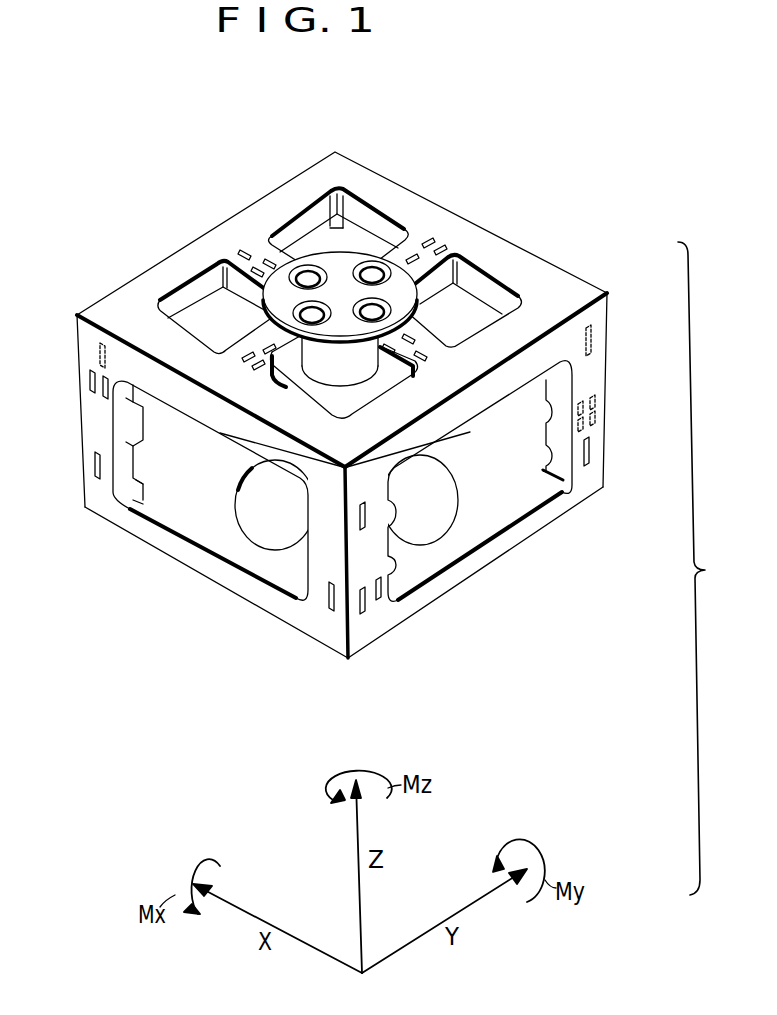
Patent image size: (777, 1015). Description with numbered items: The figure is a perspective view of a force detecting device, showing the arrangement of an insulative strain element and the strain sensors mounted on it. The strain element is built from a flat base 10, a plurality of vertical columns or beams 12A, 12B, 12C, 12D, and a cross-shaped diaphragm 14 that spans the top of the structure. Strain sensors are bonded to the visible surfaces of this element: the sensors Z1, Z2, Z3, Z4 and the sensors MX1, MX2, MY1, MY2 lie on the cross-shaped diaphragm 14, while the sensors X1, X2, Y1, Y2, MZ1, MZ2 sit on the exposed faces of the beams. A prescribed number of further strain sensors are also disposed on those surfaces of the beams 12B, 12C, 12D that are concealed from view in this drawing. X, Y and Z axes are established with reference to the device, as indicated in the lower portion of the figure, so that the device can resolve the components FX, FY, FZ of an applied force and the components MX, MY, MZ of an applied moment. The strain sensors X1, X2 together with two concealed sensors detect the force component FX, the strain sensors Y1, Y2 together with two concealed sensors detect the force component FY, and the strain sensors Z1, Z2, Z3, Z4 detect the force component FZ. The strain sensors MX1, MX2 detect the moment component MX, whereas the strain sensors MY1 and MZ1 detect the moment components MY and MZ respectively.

The flat base 10 is at (497, 520).
The vertical column or beam 12A is at (89, 429).
The vertical column or beam 12B is at (320, 553).
The vertical column or beam 12C is at (600, 386).
The vertical column or beam 12D is at (348, 232).
The cross-shaped diaphragm 14 is at (499, 241).
The strain sensor Z1 is at (410, 256).
The strain sensor Z2 is at (425, 356).
The strain sensor Z3 is at (266, 347).
The strain sensor Z4 is at (240, 248).
The strain sensor MX1 is at (428, 240).
The strain sensor MX2 is at (257, 369).
The strain sensor MY1 is at (392, 346).
The strain sensor MY2 is at (270, 265).
The strain sensor MZ1 is at (379, 588).
The strain sensor MZ2 is at (104, 394).
The strain sensor X1 is at (366, 610).
The strain sensor X2 is at (367, 508).
The strain sensor Y1 is at (96, 466).
The strain sensor Y2 is at (92, 381).